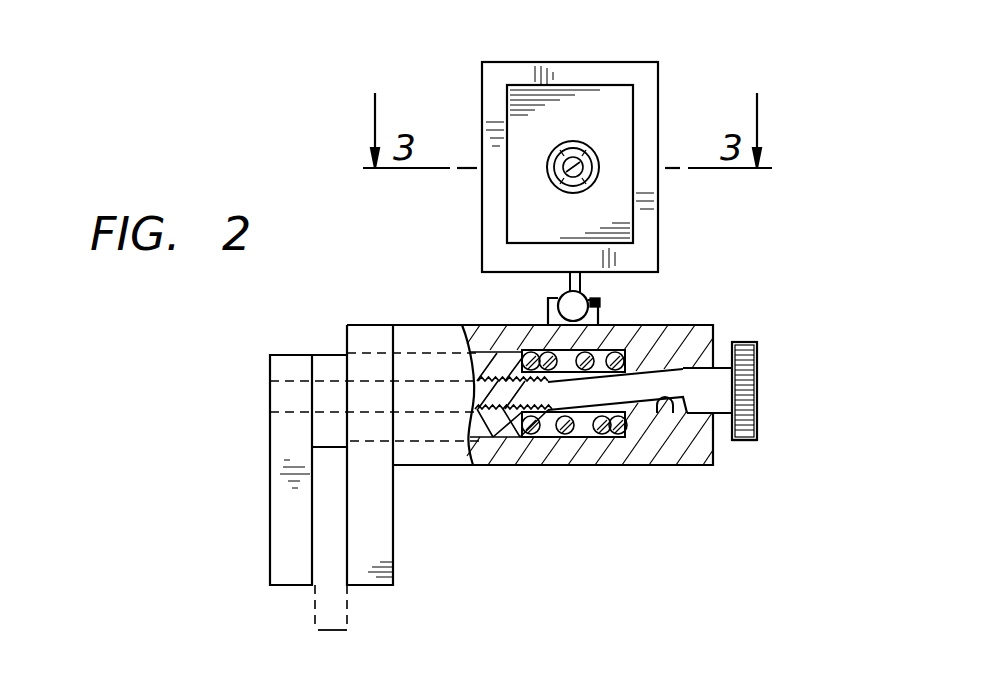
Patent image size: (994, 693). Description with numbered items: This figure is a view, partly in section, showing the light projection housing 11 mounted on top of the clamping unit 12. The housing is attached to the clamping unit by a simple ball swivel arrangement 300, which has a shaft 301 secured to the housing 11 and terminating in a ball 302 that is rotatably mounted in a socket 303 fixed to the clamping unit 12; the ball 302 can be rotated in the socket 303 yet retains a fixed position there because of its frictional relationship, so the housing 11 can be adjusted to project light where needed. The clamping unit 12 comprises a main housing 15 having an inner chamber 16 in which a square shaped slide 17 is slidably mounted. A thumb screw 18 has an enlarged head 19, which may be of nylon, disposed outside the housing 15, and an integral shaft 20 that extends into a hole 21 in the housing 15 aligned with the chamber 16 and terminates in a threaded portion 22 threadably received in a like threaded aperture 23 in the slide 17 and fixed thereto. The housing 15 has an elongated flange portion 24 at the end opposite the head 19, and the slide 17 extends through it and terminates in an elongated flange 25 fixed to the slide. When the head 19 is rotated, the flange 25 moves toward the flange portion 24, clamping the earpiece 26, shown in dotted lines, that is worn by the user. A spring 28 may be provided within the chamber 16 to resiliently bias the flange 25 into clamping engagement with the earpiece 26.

The light projection housing 11 is at (662, 139).
The clamping unit 12 is at (735, 320).
The main housing 15 is at (640, 448).
The inner chamber 16 is at (545, 450).
The square shaped slide 17 is at (500, 440).
The thumb screw 18 is at (759, 367).
The enlarged head 19 is at (744, 440).
The integral shaft 20 is at (707, 387).
The hole 21 is at (667, 403).
The threaded portion 22 is at (462, 325).
The threaded aperture 23 is at (527, 400).
The elongated flange portion 24 is at (372, 537).
The elongated flange 25 is at (287, 545).
The earpiece 26 is at (348, 655).
The spring 28 is at (558, 345).
The ball swivel arrangement 300 is at (555, 262).
The shaft 301 is at (600, 300).
The ball 302 is at (589, 306).
The socket 303 is at (600, 316).